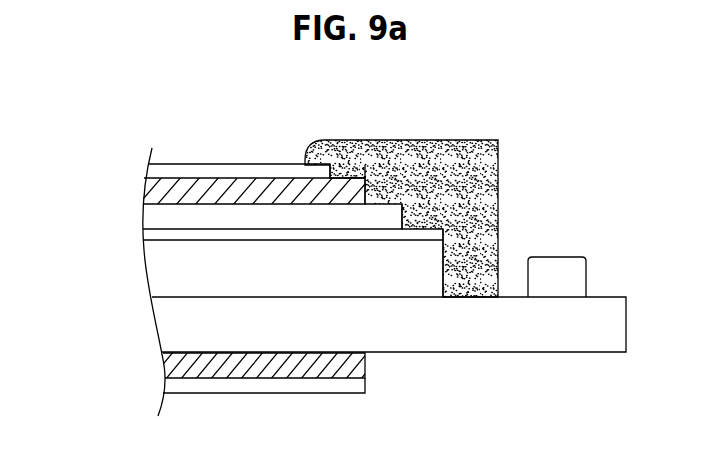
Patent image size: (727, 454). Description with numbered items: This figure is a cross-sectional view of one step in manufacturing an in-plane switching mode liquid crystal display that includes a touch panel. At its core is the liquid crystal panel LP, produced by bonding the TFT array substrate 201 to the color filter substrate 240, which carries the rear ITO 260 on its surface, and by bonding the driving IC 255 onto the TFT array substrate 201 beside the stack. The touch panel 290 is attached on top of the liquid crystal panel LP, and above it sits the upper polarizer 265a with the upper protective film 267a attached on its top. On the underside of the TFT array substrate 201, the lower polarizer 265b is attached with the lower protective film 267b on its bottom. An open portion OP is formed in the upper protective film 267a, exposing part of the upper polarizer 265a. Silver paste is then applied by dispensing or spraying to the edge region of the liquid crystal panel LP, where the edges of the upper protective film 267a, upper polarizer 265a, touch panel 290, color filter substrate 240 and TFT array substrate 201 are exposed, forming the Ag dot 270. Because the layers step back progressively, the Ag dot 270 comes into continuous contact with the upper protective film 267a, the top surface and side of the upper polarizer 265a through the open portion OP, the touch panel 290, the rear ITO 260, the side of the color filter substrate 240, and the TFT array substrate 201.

The upper protective film 267a is at (146, 170).
The upper polarizer 265a is at (143, 190).
The touch panel 290 is at (152, 223).
The rear ITO 260 is at (153, 238).
The color filter substrate 240 is at (165, 278).
The TFT array substrate 201 is at (165, 322).
The liquid crystal panel LP is at (56, 275).
The lower polarizer 265b is at (165, 362).
The lower protective film 267b is at (165, 385).
The Ag dot 270 is at (498, 187).
The open portion OP is at (339, 162).
The driving IC 255 is at (575, 277).